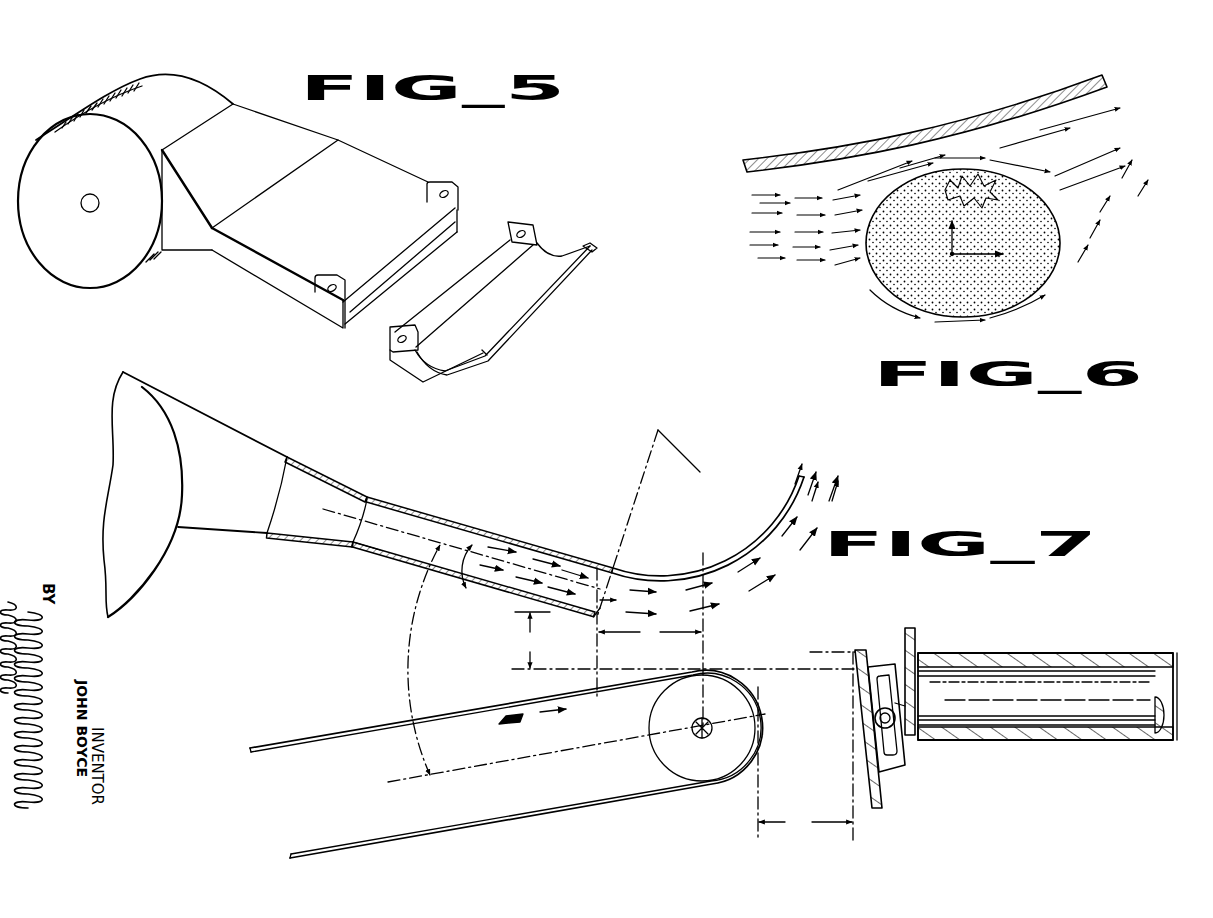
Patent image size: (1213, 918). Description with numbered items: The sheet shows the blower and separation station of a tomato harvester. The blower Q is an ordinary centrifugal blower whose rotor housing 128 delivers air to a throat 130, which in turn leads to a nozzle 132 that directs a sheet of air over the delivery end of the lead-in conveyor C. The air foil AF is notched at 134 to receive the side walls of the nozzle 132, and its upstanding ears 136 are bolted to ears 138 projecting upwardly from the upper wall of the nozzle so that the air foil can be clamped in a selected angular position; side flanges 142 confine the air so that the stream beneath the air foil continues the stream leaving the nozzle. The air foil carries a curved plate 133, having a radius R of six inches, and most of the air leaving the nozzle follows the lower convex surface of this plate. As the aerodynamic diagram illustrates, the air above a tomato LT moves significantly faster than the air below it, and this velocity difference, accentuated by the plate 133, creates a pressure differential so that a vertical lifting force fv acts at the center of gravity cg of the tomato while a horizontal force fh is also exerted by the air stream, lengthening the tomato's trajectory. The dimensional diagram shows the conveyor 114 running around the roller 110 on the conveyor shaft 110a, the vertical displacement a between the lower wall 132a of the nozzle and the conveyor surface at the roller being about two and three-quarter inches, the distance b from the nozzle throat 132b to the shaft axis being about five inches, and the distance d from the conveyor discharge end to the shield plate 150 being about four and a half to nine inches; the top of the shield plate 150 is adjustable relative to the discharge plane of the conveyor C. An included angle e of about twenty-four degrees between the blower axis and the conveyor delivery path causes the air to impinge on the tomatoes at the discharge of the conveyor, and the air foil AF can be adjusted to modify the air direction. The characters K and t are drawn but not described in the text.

In FIG. 5, the rotor housing 128 is at (203, 56).
In FIG. 7, the rotor housing 128 is at (157, 573).
In FIG. 5, the throat 130 is at (294, 123).
In FIG. 7, the throat 130 is at (193, 410).
In FIG. 5, the nozzle 132 is at (283, 263).
In FIG. 7, the nozzle 132 is at (373, 497).
In FIG. 7, the lower wall of the nozzle 132a is at (393, 555).
In FIG. 7, the nozzle throat 132b is at (597, 613).
In FIG. 5, the curved plate 133 is at (535, 300).
In FIG. 6, the curved plate 133 is at (1027, 108).
In FIG. 7, the curved plate 133 is at (640, 576).
In FIG. 5, the notch 134 is at (512, 233).
In FIG. 5, the upstanding ears 136 is at (372, 118).
In FIG. 5, the ears 138 is at (437, 181).
In FIG. 5, the side flanges 142 is at (597, 250).
In FIG. 7, the roller 110 is at (660, 757).
In FIG. 7, the conveyor shaft 110a is at (728, 742).
In FIG. 7, the conveyor 114 is at (365, 721).
In FIG. 7, the shield plate 150 is at (883, 797).
In FIG. 5, the blower Q is at (263, 108).
In FIG. 7, the blower Q is at (280, 441).
In FIG. 5, the air foil AF is at (552, 281).
In FIG. 6, the air foil AF is at (863, 137).
In FIG. 7, the air foil AF is at (790, 497).
In FIG. 6, the tomato LT is at (1058, 245).
In FIG. 7, the knife K is at (1077, 743).
In FIG. 7, the lead-in conveyor C is at (532, 822).
In FIG. 7, the radius R is at (764, 538).
In FIG. 7, the vertical displacement a is at (532, 640).
In FIG. 7, the distance b is at (650, 633).
In FIG. 7, the distance d is at (805, 823).
In FIG. 7, the included angle e is at (423, 660).
In FIG. 7, the angle t is at (460, 578).
In FIG. 6, the vertical lifting force fv is at (936, 237).
In FIG. 6, the horizontal force fh is at (977, 268).
In FIG. 6, the center of gravity cg is at (950, 256).